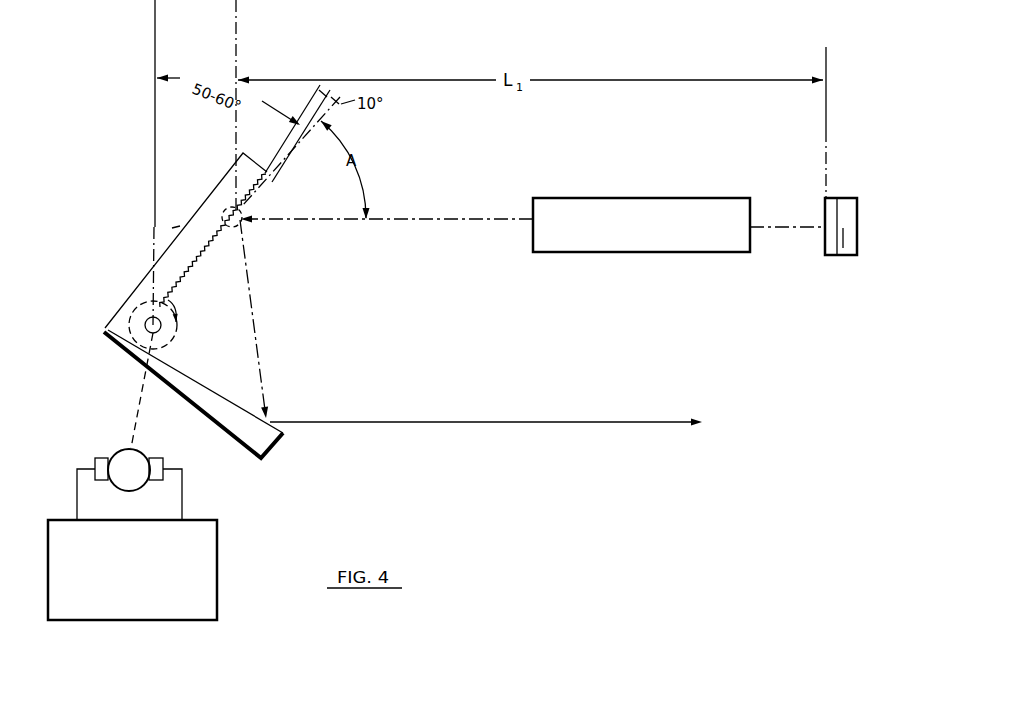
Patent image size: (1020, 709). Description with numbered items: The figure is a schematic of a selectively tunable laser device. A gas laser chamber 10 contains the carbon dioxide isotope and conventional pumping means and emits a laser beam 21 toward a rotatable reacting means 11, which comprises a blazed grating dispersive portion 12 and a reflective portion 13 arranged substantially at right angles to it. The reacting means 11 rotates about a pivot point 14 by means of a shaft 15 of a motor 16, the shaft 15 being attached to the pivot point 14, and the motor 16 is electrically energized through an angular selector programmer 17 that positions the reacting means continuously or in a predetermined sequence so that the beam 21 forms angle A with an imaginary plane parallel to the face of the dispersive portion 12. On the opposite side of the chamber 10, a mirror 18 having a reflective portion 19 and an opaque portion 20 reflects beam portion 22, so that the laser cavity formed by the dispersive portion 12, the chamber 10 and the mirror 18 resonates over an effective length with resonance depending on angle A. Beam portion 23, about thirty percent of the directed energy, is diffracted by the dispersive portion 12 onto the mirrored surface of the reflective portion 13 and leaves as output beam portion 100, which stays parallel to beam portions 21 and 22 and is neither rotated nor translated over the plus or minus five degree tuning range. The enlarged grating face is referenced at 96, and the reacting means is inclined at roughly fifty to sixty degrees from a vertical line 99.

The laser chamber 10 is at (648, 210).
The reacting means 11 is at (172, 228).
The dispersive portion 12 is at (212, 221).
The reflective portion 13 is at (187, 354).
The pivot point 14 is at (133, 321).
The shaft 15 is at (140, 384).
The motor 16 is at (138, 458).
The angular selector programmer 17 is at (187, 554).
The mirror 18 is at (850, 195).
The reflective portion 19 is at (831, 230).
The opaque portion 20 is at (844, 232).
The laser beam 21 is at (415, 219).
The beam portion 22 is at (806, 232).
The beam portion 23 is at (248, 300).
The enlarged view of blazed grating portion 96 is at (247, 205).
The vertical line 99 is at (155, 37).
The laser beam portion 100 is at (690, 422).